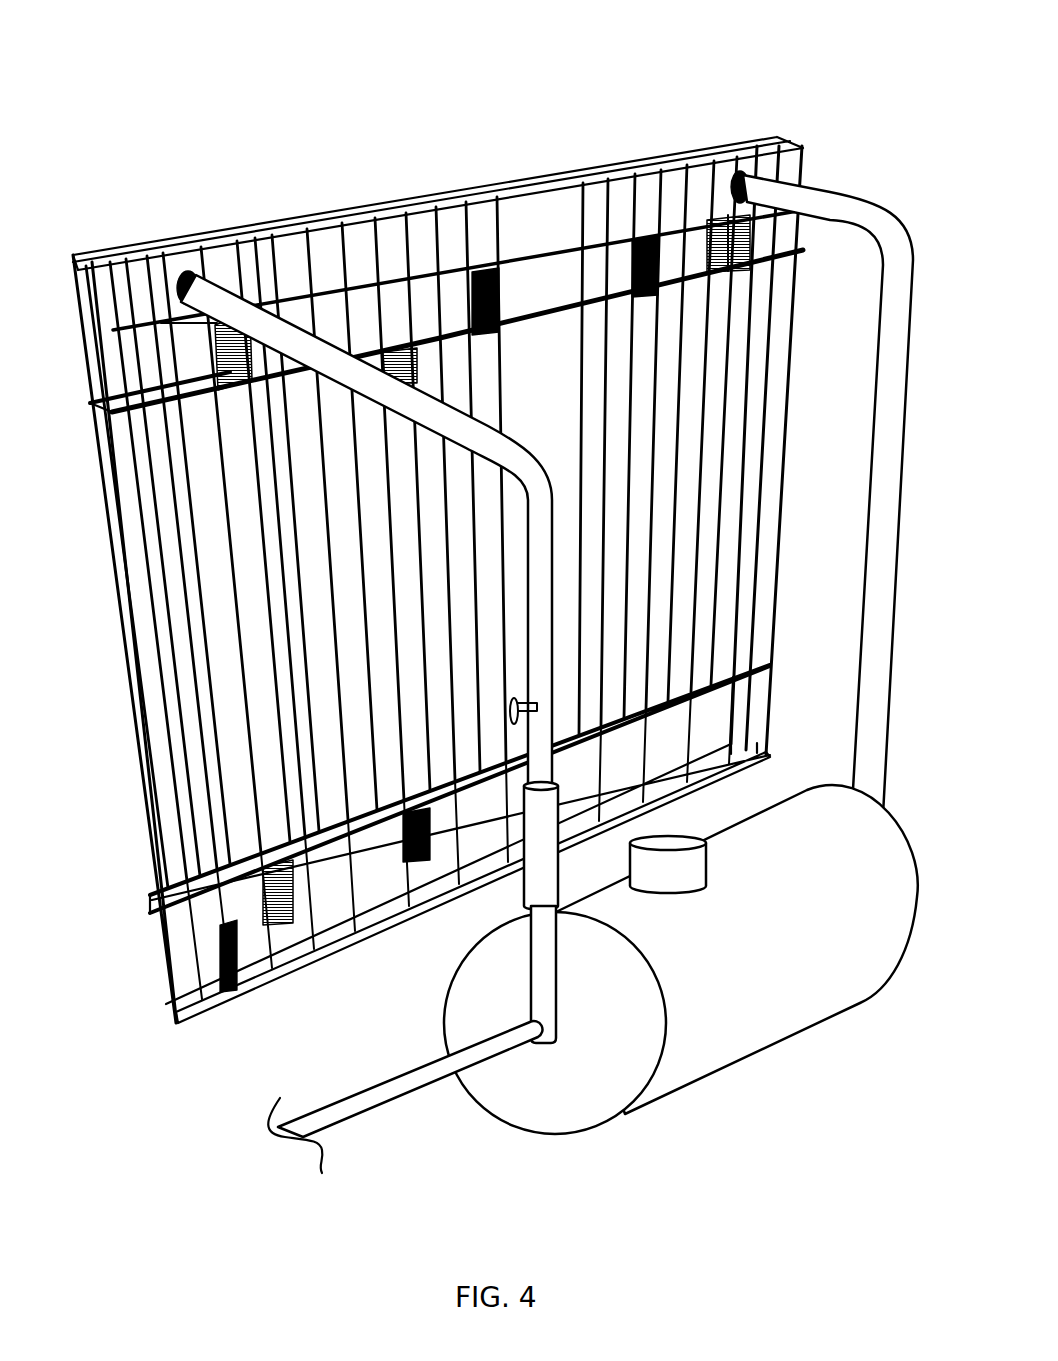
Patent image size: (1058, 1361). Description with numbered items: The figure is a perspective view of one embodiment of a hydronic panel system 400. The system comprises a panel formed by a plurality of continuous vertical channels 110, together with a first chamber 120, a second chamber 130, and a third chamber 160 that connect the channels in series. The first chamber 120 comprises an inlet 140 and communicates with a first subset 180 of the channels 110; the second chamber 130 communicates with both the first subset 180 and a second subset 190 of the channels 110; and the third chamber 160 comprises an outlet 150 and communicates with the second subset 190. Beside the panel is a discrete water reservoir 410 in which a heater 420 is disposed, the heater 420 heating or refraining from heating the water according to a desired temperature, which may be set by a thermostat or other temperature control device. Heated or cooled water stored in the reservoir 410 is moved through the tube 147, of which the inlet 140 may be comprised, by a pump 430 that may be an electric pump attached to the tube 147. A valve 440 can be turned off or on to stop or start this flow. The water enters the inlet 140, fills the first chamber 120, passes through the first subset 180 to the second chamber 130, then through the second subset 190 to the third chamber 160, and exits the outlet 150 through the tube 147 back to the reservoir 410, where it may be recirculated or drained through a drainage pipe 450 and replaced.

The hydronic panel system 400 is at (161, 78).
The continuous vertical channels 110 is at (243, 842).
The first chamber 120 is at (178, 262).
The second chamber 130 is at (250, 962).
The inlet 140 is at (207, 277).
The tube 147 is at (837, 210).
The outlet 150 is at (730, 182).
The third chamber 160 is at (482, 232).
The first subset of the channels 180 is at (252, 1003).
The second subset of the channels 190 is at (357, 960).
The discrete water reservoir 410 is at (760, 1015).
The heater 420 is at (683, 870).
The pump 430 is at (545, 900).
The valve 440 is at (512, 710).
The drainage pipe 450 is at (327, 1117).